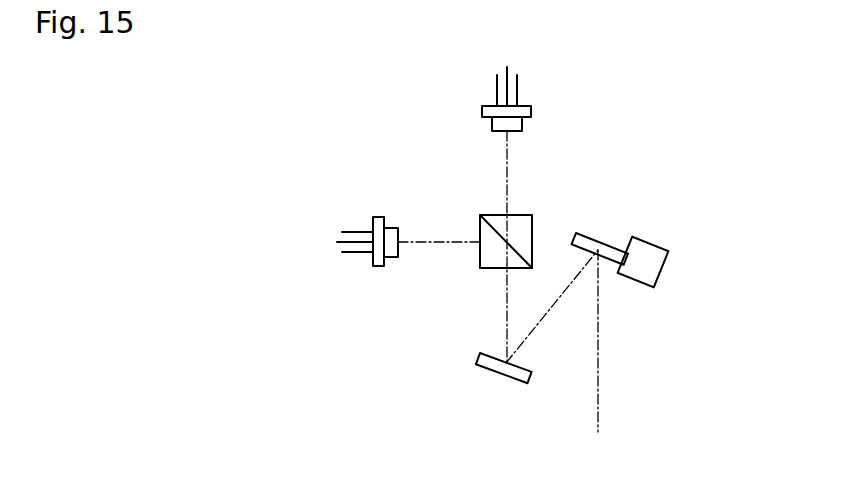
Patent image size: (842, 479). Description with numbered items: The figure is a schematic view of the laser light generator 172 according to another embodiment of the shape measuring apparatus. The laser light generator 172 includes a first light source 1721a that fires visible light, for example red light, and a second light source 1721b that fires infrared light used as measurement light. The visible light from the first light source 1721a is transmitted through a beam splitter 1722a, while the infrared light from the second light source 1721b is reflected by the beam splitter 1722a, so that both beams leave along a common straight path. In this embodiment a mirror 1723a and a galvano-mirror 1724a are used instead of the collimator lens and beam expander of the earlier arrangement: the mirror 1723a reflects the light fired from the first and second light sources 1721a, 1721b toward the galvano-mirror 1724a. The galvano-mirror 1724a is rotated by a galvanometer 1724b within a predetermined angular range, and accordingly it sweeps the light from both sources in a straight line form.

The laser light generator 172 is at (390, 120).
The first light source 1721a is at (531, 111).
The second light source 1721b is at (381, 217).
The beam splitter 1722a is at (532, 222).
The mirror 1723a is at (478, 357).
The galvano-mirror 1724a is at (615, 240).
The galvanometer 1724b is at (668, 253).